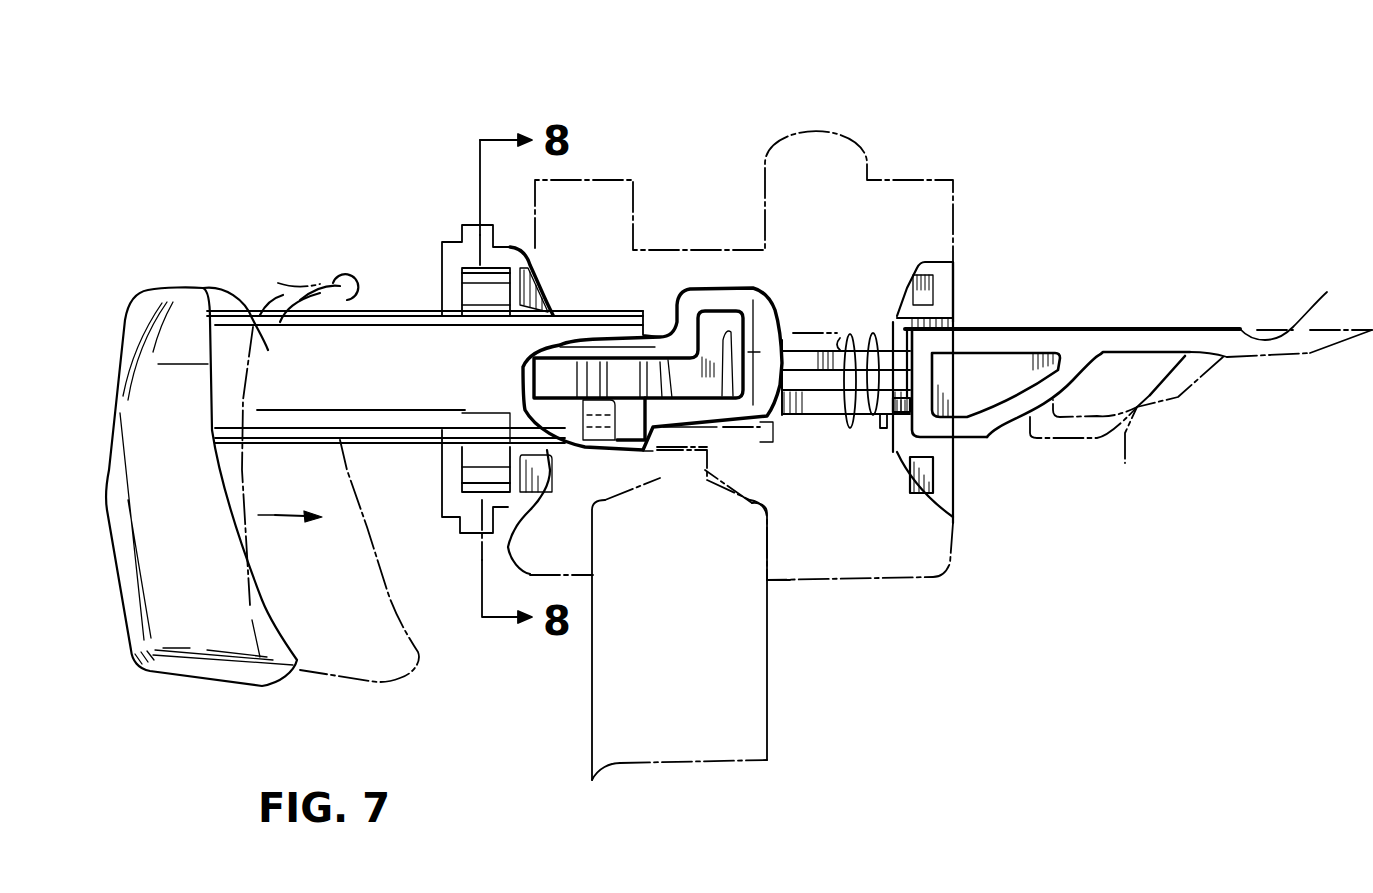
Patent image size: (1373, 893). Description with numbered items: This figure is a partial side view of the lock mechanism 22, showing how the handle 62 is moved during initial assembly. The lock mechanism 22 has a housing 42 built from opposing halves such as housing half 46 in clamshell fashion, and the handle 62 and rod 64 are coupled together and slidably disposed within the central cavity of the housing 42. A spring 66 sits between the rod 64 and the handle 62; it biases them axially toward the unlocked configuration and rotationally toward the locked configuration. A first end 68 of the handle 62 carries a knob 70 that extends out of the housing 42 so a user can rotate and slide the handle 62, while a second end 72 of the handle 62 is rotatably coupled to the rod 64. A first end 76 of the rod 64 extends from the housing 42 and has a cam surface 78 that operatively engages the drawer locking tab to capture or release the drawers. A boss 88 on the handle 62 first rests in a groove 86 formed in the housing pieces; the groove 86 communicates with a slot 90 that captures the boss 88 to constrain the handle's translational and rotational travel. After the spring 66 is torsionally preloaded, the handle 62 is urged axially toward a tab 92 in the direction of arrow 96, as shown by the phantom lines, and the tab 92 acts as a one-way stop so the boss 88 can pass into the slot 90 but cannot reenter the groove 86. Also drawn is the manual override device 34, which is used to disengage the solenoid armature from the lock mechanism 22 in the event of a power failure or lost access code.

The lock mechanism 22 is at (218, 740).
The knob 70 is at (278, 283).
The first end 68 is at (280, 322).
The arrow 96 is at (273, 517).
The handle 62 is at (405, 318).
The groove 86 is at (493, 280).
The housing 42 is at (955, 195).
The manual override device 34 is at (593, 690).
The second end 72 is at (652, 312).
The slot 90 is at (523, 375).
The boss 88 is at (553, 452).
The tab 92 is at (650, 455).
The rod 64 is at (791, 350).
The spring 66 is at (857, 333).
The housing half 46 is at (955, 294).
The cam surface 78 is at (1013, 428).
The first end 76 is at (1372, 311).